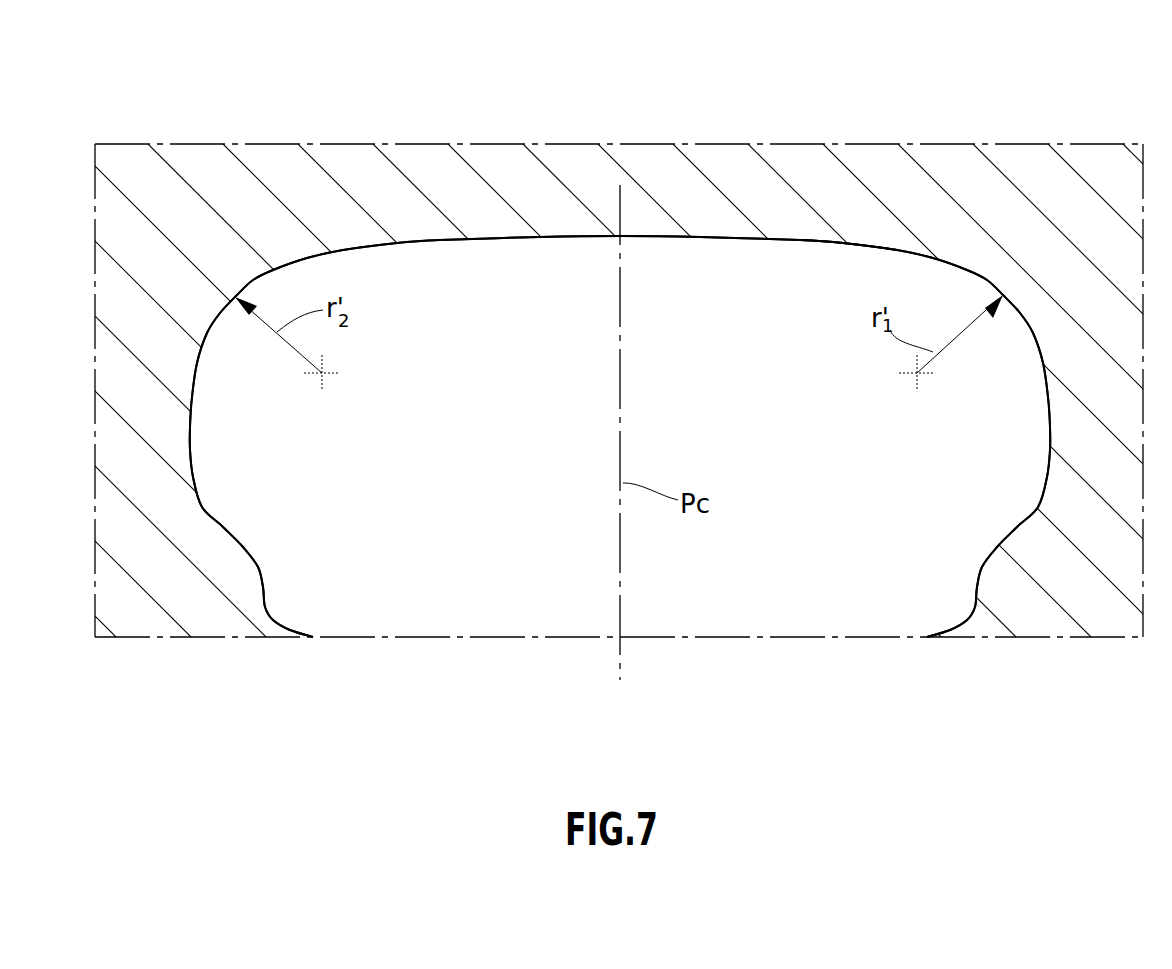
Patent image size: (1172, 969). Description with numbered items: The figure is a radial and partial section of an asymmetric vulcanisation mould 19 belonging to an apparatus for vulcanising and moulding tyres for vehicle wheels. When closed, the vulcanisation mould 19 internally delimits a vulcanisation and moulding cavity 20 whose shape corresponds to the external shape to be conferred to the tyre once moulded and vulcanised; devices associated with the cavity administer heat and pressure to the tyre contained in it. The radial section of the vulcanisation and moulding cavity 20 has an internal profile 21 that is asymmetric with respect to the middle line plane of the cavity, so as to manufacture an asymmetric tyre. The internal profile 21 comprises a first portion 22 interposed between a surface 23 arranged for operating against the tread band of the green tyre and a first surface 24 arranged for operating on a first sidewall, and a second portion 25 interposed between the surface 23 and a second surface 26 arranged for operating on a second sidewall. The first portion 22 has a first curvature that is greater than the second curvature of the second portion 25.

The vulcanisation mould 19 is at (1012, 106).
The vulcanisation and moulding cavity 20 is at (806, 389).
The internal profile 21 is at (845, 277).
The first portion of internal profile 22 is at (967, 271).
The surface arranged for operating against the tread band 23 is at (642, 240).
The first surface 24 is at (1048, 418).
The second portion of internal profile 25 is at (302, 257).
The second surface 26 is at (193, 460).